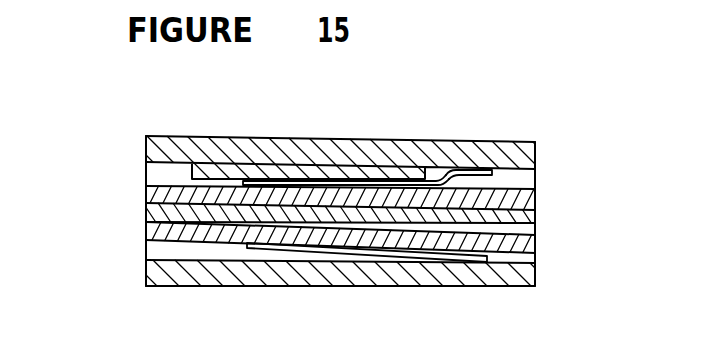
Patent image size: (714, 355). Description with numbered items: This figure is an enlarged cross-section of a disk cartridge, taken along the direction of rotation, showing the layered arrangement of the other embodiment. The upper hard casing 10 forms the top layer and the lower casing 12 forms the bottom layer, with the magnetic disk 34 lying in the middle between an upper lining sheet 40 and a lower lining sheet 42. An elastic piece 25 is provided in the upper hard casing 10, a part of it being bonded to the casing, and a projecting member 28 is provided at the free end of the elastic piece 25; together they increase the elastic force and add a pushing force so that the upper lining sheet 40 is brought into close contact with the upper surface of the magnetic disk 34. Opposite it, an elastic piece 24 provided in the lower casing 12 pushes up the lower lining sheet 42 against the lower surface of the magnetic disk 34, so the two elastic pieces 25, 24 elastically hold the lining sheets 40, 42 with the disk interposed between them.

The projecting member 28 is at (218, 179).
The elastic piece 25 is at (341, 183).
The upper hard casing 10 is at (470, 169).
The upper lining sheet 40 is at (160, 189).
The magnetic disk 34 is at (521, 216).
The lower lining sheet 42 is at (163, 235).
The elastic piece 24 is at (284, 246).
The lower casing 12 is at (410, 275).